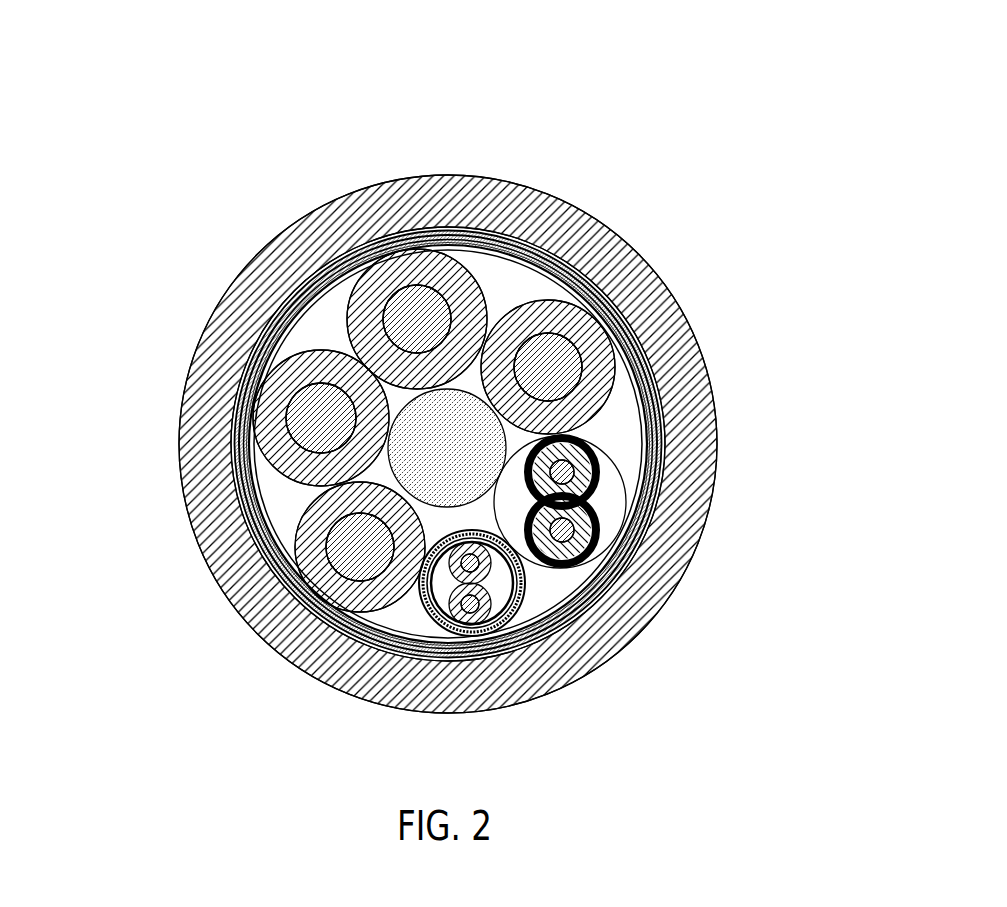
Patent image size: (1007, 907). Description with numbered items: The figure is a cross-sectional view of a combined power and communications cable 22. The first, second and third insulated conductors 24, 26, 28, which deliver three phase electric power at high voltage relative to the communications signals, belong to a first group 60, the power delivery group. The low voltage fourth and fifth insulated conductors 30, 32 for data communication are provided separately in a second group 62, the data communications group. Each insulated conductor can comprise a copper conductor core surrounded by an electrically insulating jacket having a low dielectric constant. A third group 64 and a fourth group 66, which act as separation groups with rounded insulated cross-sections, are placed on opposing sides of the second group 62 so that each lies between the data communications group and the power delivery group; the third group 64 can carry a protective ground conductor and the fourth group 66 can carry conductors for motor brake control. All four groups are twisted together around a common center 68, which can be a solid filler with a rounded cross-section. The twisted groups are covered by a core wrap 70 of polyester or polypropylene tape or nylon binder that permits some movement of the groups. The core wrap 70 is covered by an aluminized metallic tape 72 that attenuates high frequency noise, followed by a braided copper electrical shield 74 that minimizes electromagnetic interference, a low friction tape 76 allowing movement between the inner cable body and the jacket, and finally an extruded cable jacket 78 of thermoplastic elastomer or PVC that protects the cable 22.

The cable 22 is at (252, 162).
The first insulated conductor 24 is at (322, 420).
The second insulated conductor 26 is at (417, 312).
The third insulated conductor 28 is at (555, 352).
The fourth insulated conductor 30 is at (340, 650).
The fifth insulated conductor 32 is at (365, 695).
The first group 60 is at (505, 245).
The second group 62 is at (528, 600).
The third group 64 is at (262, 606).
The fourth group 66 is at (620, 458).
The common center 68 is at (437, 457).
The core wrap 70 is at (648, 463).
The metallic tape 72 is at (656, 482).
The electrical shield 74 is at (650, 500).
The low friction tape 76 is at (650, 520).
The cable jacket 78 is at (667, 552).